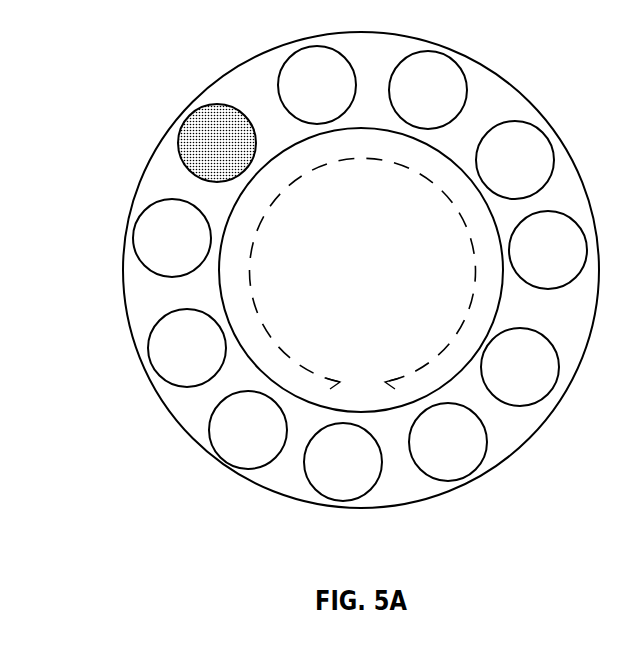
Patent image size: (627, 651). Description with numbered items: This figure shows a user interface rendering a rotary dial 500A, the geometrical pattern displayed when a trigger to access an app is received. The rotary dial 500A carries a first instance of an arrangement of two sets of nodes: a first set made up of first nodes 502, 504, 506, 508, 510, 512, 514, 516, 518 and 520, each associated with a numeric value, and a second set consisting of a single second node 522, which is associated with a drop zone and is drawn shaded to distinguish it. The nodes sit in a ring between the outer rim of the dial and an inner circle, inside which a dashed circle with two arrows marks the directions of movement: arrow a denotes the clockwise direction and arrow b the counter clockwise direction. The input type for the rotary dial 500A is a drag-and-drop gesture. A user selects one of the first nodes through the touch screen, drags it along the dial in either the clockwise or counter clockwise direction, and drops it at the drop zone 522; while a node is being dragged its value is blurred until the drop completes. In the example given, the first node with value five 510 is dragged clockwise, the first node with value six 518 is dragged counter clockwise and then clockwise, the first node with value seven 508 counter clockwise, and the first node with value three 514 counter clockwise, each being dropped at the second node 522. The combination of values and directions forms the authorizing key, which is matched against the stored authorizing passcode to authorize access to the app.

The rotary dial 500A is at (223, 58).
The first node 502 is at (299, 106).
The first node 504 is at (410, 111).
The first node 506 is at (497, 181).
The first node 508 is at (530, 271).
The first node 510 is at (502, 388).
The first node 512 is at (430, 463).
The first node 514 is at (325, 483).
The first node 516 is at (230, 451).
The first node 518 is at (169, 369).
The first node 520 is at (154, 259).
The second node 522 is at (199, 153).